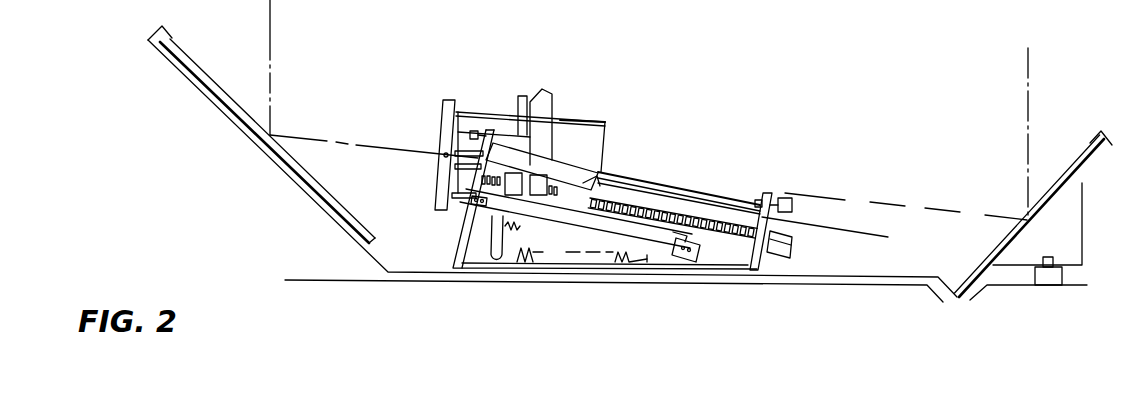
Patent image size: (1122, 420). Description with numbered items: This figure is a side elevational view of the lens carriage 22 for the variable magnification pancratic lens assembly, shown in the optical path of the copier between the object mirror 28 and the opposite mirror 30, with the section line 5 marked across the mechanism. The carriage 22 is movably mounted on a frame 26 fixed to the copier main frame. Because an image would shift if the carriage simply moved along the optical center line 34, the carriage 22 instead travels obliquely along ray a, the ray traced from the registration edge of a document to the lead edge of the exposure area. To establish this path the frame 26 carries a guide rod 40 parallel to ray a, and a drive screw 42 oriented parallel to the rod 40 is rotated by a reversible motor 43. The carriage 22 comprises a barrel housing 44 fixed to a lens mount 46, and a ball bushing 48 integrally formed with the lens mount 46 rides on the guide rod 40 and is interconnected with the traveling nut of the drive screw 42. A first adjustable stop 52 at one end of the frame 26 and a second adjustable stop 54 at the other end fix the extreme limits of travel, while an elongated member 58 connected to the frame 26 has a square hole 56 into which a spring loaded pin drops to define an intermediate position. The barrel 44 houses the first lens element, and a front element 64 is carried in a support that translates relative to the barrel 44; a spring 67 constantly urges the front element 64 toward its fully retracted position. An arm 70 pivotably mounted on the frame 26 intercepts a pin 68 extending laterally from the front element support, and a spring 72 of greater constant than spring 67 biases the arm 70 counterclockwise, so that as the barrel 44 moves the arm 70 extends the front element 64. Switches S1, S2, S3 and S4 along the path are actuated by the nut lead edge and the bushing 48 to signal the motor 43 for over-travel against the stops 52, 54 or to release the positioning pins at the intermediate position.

The lens carriage 22 is at (470, 112).
The frame 26 is at (452, 243).
The object mirror 28 is at (181, 48).
The right guide fixture 30 is at (1082, 168).
The optical center line 34 is at (296, 135).
The guide rod 40 is at (673, 183).
The drive screw 42 is at (707, 230).
The reversible motor 43 is at (783, 246).
The barrel housing 44 is at (602, 123).
The lens mount 46 is at (548, 98).
The ball bushing 48 is at (517, 138).
The first adjustable stop 52 is at (472, 138).
The second adjustable stop 54 is at (783, 198).
The square hole 56 is at (590, 253).
The elongated member 58 is at (625, 237).
The front lens element 64 is at (447, 107).
The spring 67 is at (460, 215).
The pin 68 is at (445, 155).
The arm 70 is at (495, 237).
The spring 72 is at (530, 210).
The switch S1 is at (460, 188).
The switch S2 is at (585, 180).
The switch S3 is at (672, 243).
The switch S4 is at (509, 238).
The ray a is at (810, 225).
The section line 5- 5 is at (648, 168).